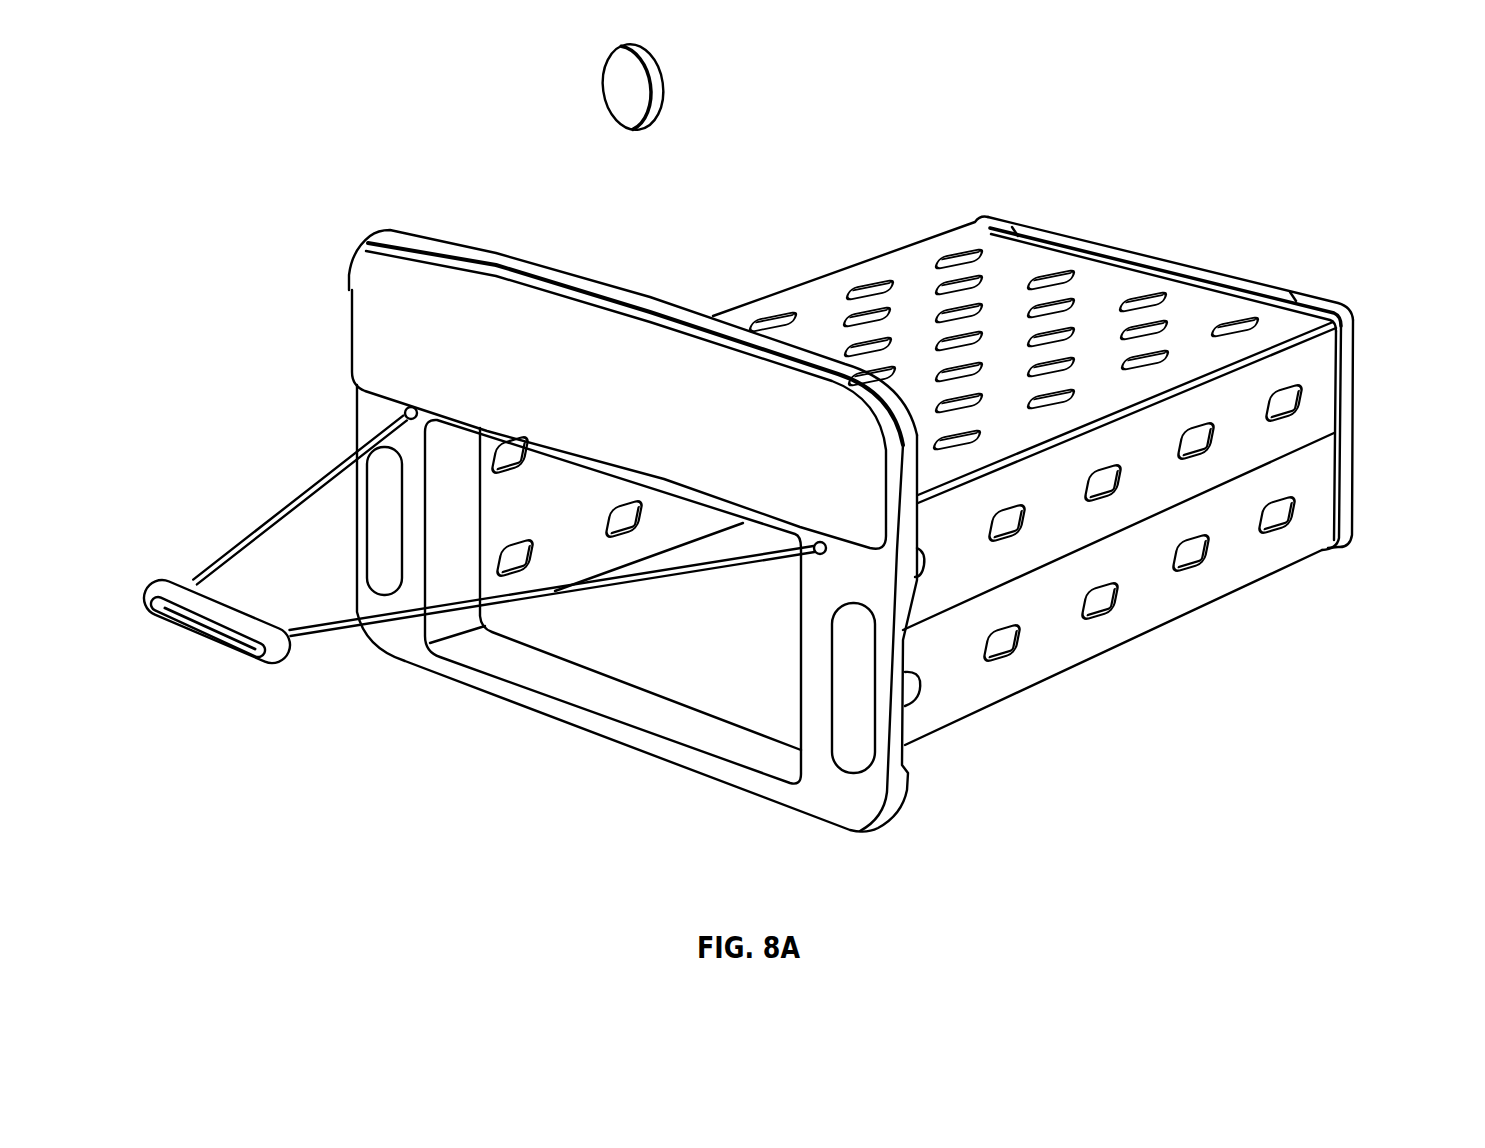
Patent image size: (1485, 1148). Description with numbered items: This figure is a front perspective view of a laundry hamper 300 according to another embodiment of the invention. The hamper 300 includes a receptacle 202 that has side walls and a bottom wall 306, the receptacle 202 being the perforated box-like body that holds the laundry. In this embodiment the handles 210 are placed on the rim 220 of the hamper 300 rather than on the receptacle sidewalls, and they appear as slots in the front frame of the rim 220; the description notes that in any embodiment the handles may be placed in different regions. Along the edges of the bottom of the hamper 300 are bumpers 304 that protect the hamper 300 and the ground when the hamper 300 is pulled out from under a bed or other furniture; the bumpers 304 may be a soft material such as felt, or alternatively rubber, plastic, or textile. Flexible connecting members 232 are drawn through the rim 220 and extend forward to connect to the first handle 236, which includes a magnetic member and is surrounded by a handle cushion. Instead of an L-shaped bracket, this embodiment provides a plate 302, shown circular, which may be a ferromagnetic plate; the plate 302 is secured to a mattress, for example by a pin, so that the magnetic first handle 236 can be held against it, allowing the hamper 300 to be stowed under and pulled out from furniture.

The laundry hamper 300 is at (248, 161).
The receptacle 202 is at (863, 260).
The rim 220 is at (434, 234).
The handles 210 is at (382, 508).
The flexible connecting members 232 is at (298, 497).
The first handle 236 is at (167, 582).
The plate 302 is at (600, 84).
The bumpers 304 is at (1132, 260).
The bottom wall 306 is at (1353, 412).